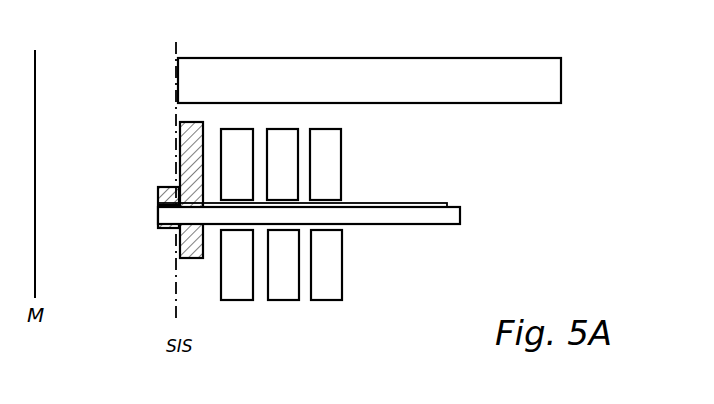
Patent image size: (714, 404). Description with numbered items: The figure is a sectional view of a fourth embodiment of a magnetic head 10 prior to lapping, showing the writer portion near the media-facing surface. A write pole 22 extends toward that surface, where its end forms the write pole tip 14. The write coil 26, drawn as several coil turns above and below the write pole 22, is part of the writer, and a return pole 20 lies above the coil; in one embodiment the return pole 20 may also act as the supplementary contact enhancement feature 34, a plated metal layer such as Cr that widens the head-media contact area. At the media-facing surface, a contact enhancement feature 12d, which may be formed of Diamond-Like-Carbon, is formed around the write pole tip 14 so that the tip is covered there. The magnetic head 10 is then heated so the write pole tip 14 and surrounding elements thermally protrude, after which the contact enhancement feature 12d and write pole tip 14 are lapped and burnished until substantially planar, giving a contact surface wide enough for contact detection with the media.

The magnetic head 10 is at (598, 96).
The return pole 20 is at (290, 67).
The supplementary contact enhancement feature 34 is at (463, 67).
The contact enhancement feature 12d is at (158, 192).
The write pole tip 14 is at (154, 208).
The write pole 22 is at (367, 203).
The write coil 26 is at (330, 166).